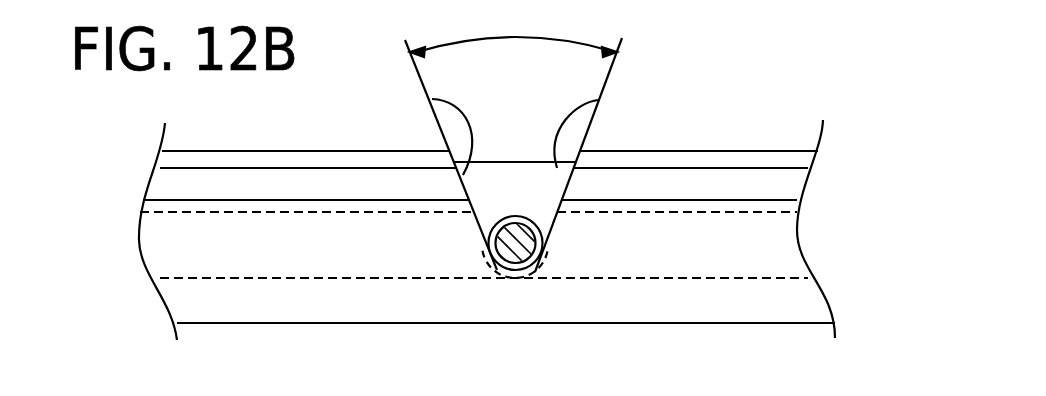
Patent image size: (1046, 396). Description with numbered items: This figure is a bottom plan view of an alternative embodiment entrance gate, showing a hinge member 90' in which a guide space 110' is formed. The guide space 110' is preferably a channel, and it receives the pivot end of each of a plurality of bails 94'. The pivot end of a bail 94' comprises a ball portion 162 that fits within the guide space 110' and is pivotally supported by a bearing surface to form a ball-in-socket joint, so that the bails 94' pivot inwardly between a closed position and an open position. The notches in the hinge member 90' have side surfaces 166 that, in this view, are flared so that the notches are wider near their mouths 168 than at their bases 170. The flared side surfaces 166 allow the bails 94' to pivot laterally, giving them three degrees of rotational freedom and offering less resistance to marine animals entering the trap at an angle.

The hinge member 90' is at (487, 255).
The guide space 110' is at (427, 245).
The bases 170 is at (513, 215).
The side surfaces 166 is at (432, 99).
The mouths 168 is at (484, 188).
The ball portion 162 is at (522, 213).
The bails 94' is at (446, 281).